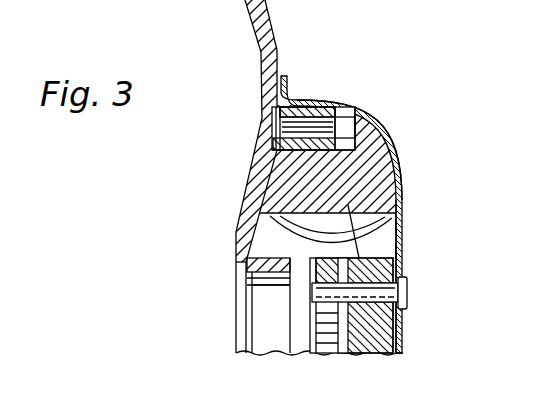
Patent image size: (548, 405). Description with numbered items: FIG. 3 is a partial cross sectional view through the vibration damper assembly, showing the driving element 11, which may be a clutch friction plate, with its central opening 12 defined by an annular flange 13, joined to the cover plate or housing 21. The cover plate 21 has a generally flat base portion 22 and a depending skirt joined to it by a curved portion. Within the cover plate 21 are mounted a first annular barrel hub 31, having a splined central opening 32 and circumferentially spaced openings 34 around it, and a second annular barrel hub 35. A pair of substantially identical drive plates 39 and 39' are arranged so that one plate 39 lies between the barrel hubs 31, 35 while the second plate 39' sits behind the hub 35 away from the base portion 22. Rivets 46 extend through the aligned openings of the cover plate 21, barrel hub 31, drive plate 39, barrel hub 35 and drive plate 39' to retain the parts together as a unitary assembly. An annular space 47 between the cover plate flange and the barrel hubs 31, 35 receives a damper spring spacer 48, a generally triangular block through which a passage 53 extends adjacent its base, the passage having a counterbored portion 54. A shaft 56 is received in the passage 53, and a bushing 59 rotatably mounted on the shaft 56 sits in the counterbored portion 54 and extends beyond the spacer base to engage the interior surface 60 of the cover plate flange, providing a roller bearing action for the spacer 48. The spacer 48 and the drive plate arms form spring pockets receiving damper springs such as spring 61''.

The driving element 11 is at (252, 10).
The central opening 12 is at (240, 290).
The annular flange 13 is at (240, 270).
The cover plate 21 is at (412, 182).
The base portion 22 is at (385, 260).
The first annular barrel hub 31 is at (360, 285).
The central opening 32 is at (395, 340).
The circumferentially spaced openings 34 is at (397, 228).
The second annular barrel hub 35 is at (245, 258).
The drive plate 39 is at (331, 234).
The drive plate 39' is at (271, 312).
The rivets 46 is at (407, 293).
The annular space 47 is at (403, 208).
The damper spring spacer 48 is at (262, 165).
The passage 53 is at (363, 130).
The counterbored portion 54 is at (327, 191).
The shaft 56 is at (278, 125).
The bushing 59 is at (300, 108).
The interior surface 60 is at (320, 107).
The damper spring 61'' is at (216, 229).